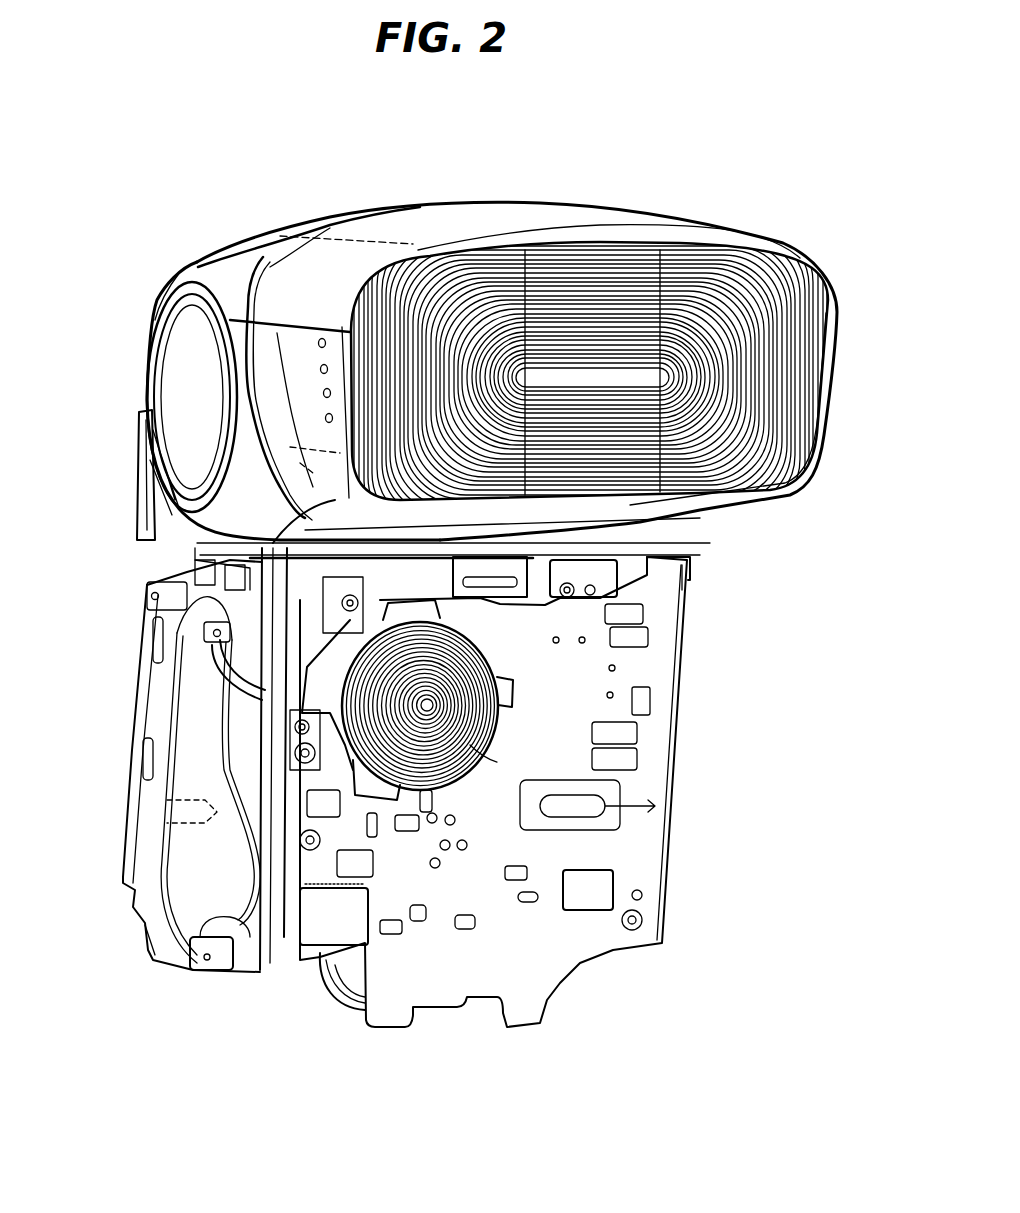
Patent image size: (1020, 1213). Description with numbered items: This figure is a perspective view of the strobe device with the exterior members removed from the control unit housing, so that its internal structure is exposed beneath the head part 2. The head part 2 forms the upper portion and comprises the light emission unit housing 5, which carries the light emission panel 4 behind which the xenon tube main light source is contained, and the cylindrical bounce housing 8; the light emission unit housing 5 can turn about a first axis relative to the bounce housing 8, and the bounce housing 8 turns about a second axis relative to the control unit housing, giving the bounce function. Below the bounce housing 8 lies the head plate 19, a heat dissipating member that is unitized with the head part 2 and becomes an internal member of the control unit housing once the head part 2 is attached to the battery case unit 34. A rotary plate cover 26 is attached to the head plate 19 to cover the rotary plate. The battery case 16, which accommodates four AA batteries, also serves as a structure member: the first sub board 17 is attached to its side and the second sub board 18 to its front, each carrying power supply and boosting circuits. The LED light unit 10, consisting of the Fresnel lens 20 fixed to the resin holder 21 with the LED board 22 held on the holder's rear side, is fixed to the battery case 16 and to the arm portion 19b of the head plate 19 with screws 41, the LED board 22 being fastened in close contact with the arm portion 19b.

The head part 2 is at (432, 226).
The light emission panel 4 is at (688, 292).
The light emission unit housing 5 is at (335, 240).
The bounce housing 8 is at (145, 503).
The LED light unit 10 is at (483, 713).
The battery case 16 is at (197, 665).
The first sub board 17 is at (688, 578).
The second sub board 18 is at (653, 653).
The head plate 19 is at (450, 600).
The arm portion 19b is at (330, 597).
The Fresnel lens 20 is at (460, 740).
The resin holder 21 is at (343, 747).
The LED board 22 is at (320, 632).
The rotary plate cover 26 is at (592, 565).
The battery case unit 34 is at (277, 910).
The screws 41 is at (300, 765).